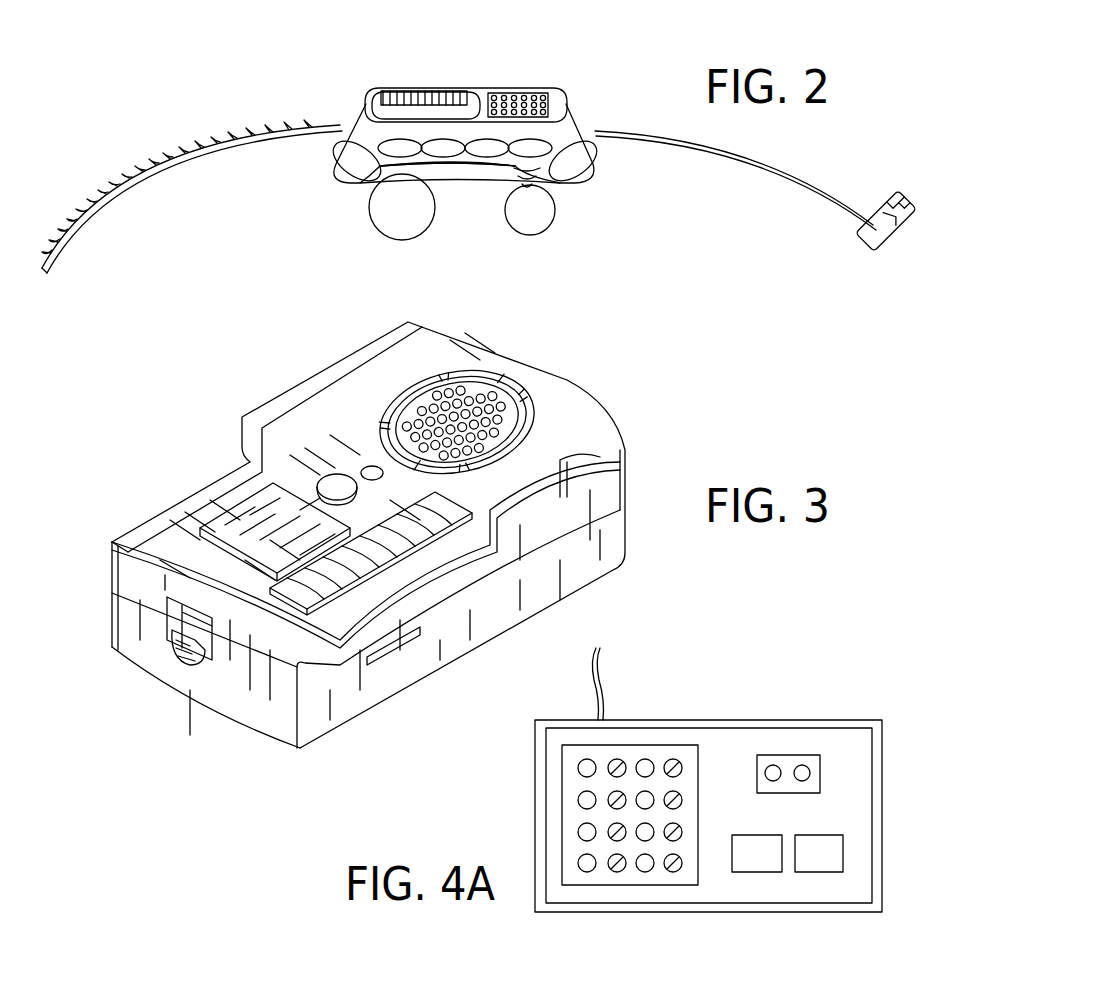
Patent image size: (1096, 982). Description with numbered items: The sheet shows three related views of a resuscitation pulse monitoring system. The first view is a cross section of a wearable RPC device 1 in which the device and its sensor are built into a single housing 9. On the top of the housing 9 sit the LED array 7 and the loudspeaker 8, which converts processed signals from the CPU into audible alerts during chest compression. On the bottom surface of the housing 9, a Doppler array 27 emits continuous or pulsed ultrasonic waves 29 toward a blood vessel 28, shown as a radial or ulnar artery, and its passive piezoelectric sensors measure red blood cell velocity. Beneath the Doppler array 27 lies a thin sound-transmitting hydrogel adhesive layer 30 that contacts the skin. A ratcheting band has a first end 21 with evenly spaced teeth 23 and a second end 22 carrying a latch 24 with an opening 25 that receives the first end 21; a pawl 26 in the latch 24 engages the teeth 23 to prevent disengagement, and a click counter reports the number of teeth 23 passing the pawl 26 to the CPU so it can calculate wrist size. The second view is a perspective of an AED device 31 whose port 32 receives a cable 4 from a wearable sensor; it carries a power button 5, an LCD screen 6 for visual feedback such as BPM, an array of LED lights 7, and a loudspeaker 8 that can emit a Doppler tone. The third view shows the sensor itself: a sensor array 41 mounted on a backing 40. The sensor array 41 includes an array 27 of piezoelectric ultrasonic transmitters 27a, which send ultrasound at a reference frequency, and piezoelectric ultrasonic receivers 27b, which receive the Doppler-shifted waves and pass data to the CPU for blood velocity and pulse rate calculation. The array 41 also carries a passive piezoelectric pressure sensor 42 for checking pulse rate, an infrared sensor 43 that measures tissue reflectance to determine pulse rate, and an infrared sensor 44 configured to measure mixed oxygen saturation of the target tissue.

In FIG. 2, the wearable RPC device 1 is at (461, 145).
In FIG. 4A, the cable 4 is at (590, 670).
In FIG. 3, the power button 5 is at (340, 478).
In FIG. 3, the LCD screen 6 is at (247, 520).
In FIG. 2, the LED array 7 is at (428, 87).
In FIG. 3, the LED array 7 is at (357, 578).
In FIG. 2, the loudspeaker 8 is at (520, 93).
In FIG. 3, the loudspeaker 8 is at (505, 392).
In FIG. 2, the housing 9 is at (362, 108).
In FIG. 3, the housing 9 is at (628, 452).
In FIG. 2, the first end of the band 21 is at (192, 175).
In FIG. 2, the second end of the band 22 is at (772, 174).
In FIG. 2, the teeth 23 is at (222, 136).
In FIG. 2, the latch 24 is at (907, 223).
In FIG. 2, the opening 25 is at (917, 227).
In FIG. 2, the pawl 26 is at (897, 238).
In FIG. 2, the Doppler array 27 is at (362, 165).
In FIG. 4A, the Doppler array 27 is at (622, 800).
In FIG. 4A, the piezoelectric ultrasonic transmitters 27a is at (592, 872).
In FIG. 4A, the piezoelectric ultrasonic receivers 27b is at (647, 872).
In FIG. 2, the blood vessel 28 is at (402, 237).
In FIG. 2, the ultrasonic waves 29 is at (532, 178).
In FIG. 2, the hydrogel adhesive layer 30 is at (508, 165).
In FIG. 3, the AED device 31 is at (355, 539).
In FIG. 3, the port 32 is at (190, 650).
In FIG. 4A, the backing 40 is at (736, 794).
In FIG. 4A, the sensor array 41 is at (790, 728).
In FIG. 4A, the passive piezoelectric pressure sensor 42 is at (820, 768).
In FIG. 4A, the infrared sensor 43 is at (822, 872).
In FIG. 4A, the infrared sensor for oxygen saturation 44 is at (756, 872).